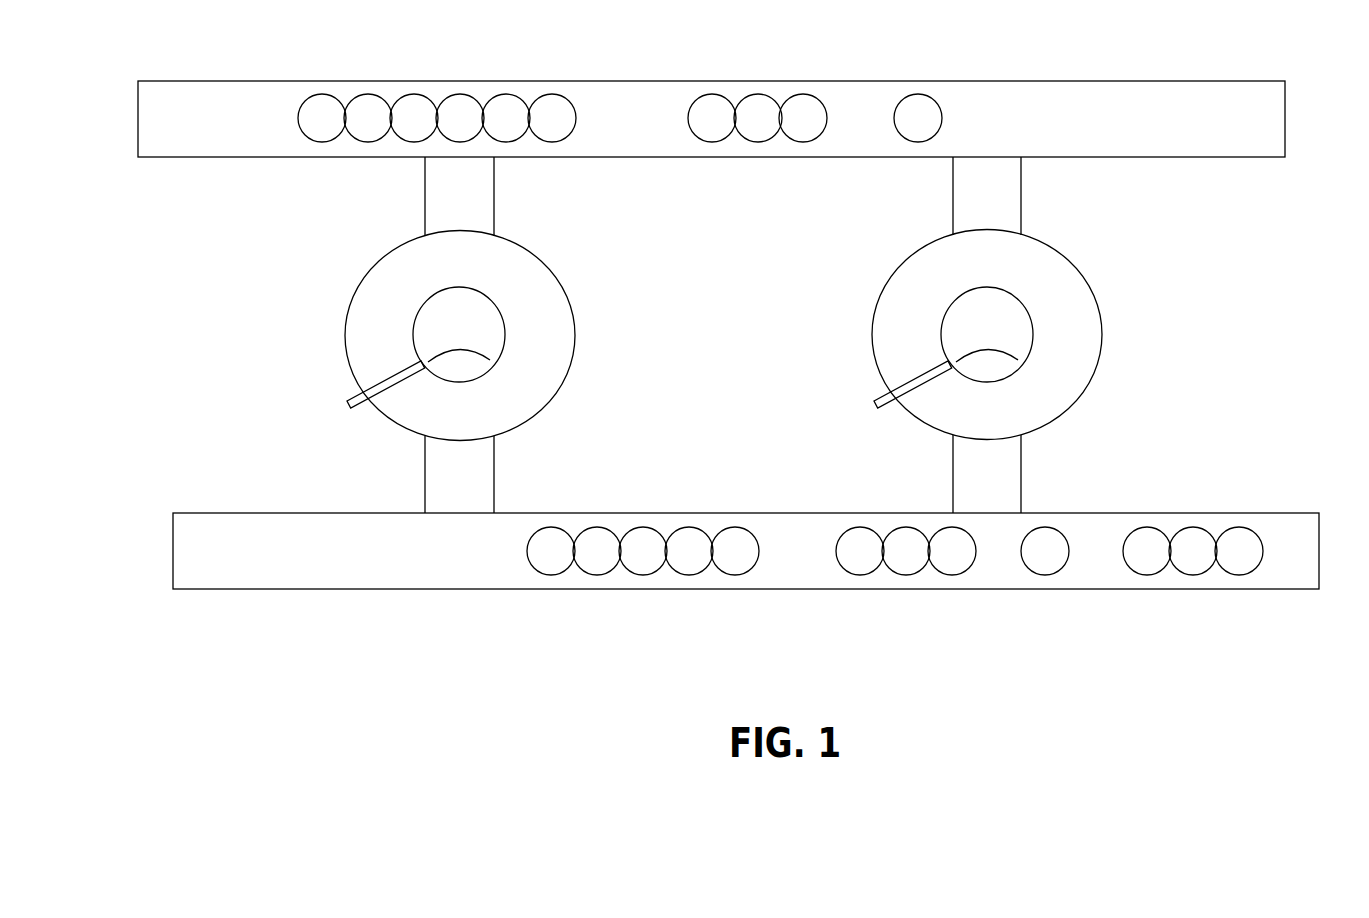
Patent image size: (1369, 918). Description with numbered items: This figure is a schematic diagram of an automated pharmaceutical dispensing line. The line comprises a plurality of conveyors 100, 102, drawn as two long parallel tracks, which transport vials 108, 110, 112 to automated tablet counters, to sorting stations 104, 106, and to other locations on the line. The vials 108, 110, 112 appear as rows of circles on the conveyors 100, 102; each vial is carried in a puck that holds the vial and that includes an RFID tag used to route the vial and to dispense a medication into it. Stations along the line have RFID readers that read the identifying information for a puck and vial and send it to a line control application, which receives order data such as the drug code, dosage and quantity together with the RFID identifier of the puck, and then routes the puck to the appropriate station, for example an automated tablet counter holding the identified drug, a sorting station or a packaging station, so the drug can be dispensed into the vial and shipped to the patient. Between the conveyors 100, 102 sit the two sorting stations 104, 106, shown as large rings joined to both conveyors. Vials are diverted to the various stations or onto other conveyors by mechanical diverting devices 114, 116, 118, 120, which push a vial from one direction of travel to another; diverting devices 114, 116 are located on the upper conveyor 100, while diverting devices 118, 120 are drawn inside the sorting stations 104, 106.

The conveyor 100 is at (739, 119).
The conveyor 102 is at (769, 551).
The sorting station 104 is at (428, 372).
The sorting station 106 is at (1012, 372).
The vial 108 is at (414, 118).
The vial 110 is at (791, 118).
The vial 112 is at (857, 551).
The mechanical diverting device 114 is at (490, 77).
The mechanical diverting device 116 is at (1015, 77).
The mechanical diverting device 118 is at (426, 347).
The mechanical diverting device 120 is at (953, 347).